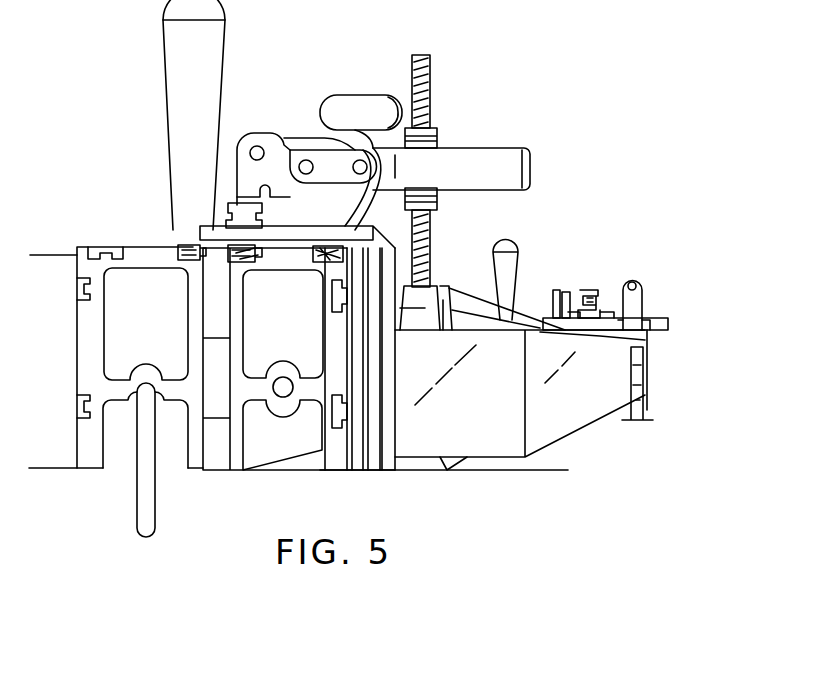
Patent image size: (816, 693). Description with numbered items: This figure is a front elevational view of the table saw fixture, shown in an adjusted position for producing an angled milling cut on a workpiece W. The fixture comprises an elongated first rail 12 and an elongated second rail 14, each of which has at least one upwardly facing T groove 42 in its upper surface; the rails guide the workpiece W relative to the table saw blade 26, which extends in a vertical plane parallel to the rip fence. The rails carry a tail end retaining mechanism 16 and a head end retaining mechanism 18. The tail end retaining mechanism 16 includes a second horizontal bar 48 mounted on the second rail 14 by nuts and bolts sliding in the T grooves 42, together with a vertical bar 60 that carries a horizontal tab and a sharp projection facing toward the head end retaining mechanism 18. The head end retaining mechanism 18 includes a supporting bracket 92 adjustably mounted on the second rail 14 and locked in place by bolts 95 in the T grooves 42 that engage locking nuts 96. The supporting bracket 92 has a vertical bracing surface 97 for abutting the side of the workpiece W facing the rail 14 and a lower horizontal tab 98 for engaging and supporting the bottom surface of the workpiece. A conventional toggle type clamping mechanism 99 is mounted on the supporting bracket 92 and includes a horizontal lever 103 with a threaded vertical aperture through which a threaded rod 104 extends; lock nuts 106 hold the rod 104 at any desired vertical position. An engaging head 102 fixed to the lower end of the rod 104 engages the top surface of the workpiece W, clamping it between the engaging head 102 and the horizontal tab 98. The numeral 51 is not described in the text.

The first rail 12 is at (105, 477).
The second rail 14 is at (310, 474).
The tail end retaining mechanism 16 is at (608, 258).
The head end retaining mechanism 18 is at (572, 479).
The blade 26 is at (638, 406).
The T groove 42 is at (232, 256).
The second horizontal bar 48 is at (660, 320).
The T-nut 51 is at (180, 249).
The vertical bar 60 is at (640, 297).
The supporting bracket 92 is at (200, 236).
The bolt 95 is at (240, 256).
The locking nut 96 is at (228, 210).
The vertical bracing surface 97 is at (396, 440).
The horizontal tab 98 is at (442, 462).
The toggle type clamping mechanism 99 is at (348, 86).
The engaging head 102 is at (430, 295).
The horizontal lever 103 is at (486, 158).
The threaded rod 104 is at (422, 72).
The lock nuts 106 is at (425, 200).
The workpiece W is at (567, 422).